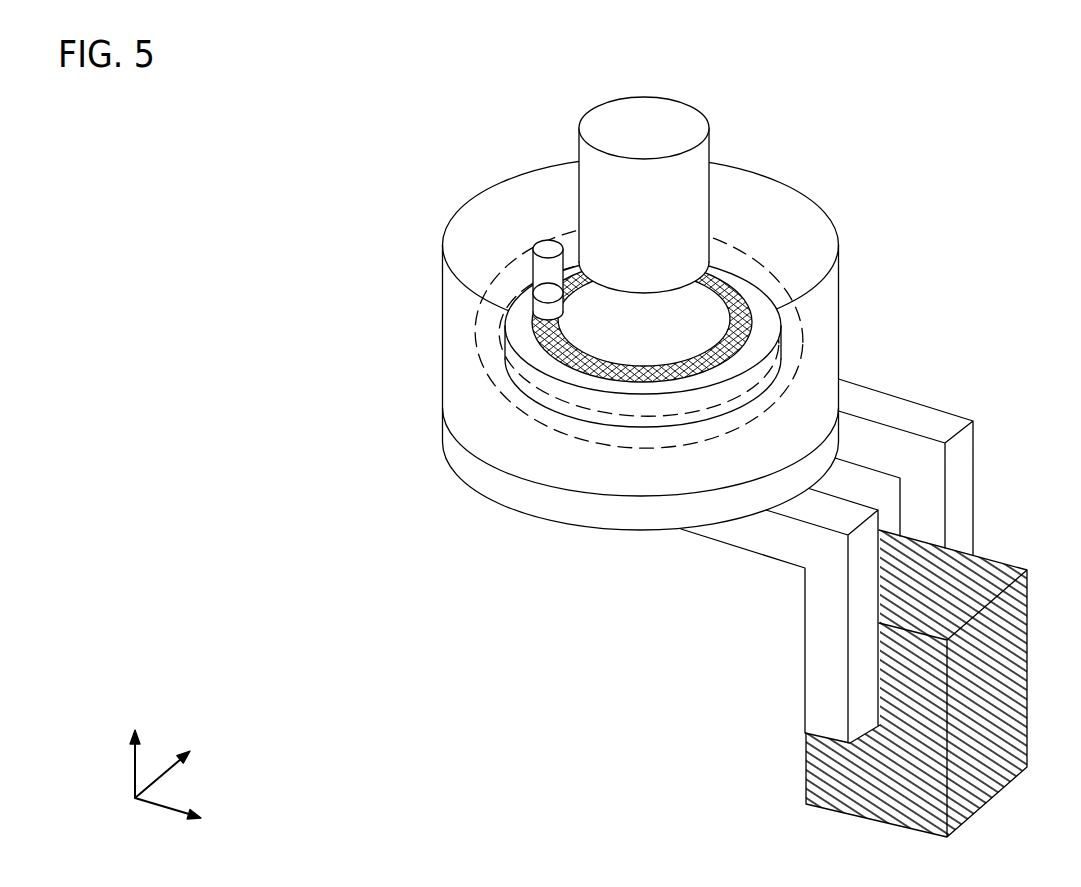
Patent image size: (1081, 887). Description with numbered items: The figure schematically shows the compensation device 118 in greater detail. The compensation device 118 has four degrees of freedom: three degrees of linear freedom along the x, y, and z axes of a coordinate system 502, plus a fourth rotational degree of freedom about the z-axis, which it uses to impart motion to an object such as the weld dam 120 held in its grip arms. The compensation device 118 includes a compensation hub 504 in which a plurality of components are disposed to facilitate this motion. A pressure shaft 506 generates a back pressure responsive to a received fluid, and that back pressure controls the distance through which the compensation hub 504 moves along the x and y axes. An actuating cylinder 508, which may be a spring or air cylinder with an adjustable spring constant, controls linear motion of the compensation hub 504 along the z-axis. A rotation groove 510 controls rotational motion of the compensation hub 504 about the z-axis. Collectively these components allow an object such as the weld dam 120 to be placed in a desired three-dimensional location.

The compensation device 118 is at (701, 66).
The weld dam 120 is at (1027, 571).
The coordinate system 502 is at (179, 688).
The compensation hub 504 is at (793, 182).
The pressure shaft 506 is at (546, 243).
The actuating cylinder 508 is at (601, 118).
The rotation groove 510 is at (746, 303).